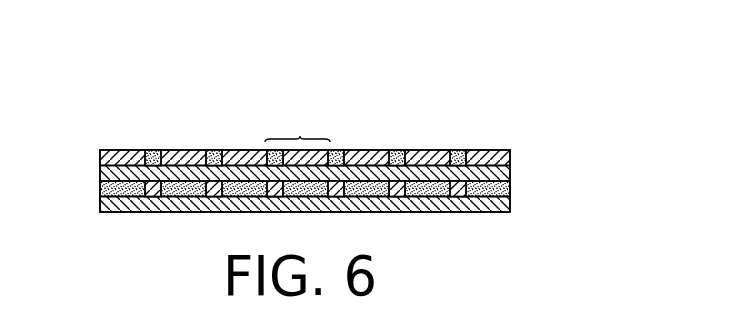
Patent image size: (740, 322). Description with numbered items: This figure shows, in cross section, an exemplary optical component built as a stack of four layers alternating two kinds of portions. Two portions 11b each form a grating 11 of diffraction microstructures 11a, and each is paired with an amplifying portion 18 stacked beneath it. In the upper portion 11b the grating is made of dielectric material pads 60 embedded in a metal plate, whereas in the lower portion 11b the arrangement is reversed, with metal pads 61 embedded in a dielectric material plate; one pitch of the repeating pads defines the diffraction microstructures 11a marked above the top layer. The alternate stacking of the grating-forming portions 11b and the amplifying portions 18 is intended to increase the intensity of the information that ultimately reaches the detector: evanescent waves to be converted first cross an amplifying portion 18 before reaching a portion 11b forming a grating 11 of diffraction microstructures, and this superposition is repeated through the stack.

The grating of diffraction microstructures 11 is at (395, 135).
The diffraction microstructures 11a is at (297, 127).
The portion forming the grating 11b is at (510, 155).
The amplifying portion 18 is at (100, 172).
The dielectric material pads 60 is at (153, 150).
The metal pads 61 is at (155, 193).